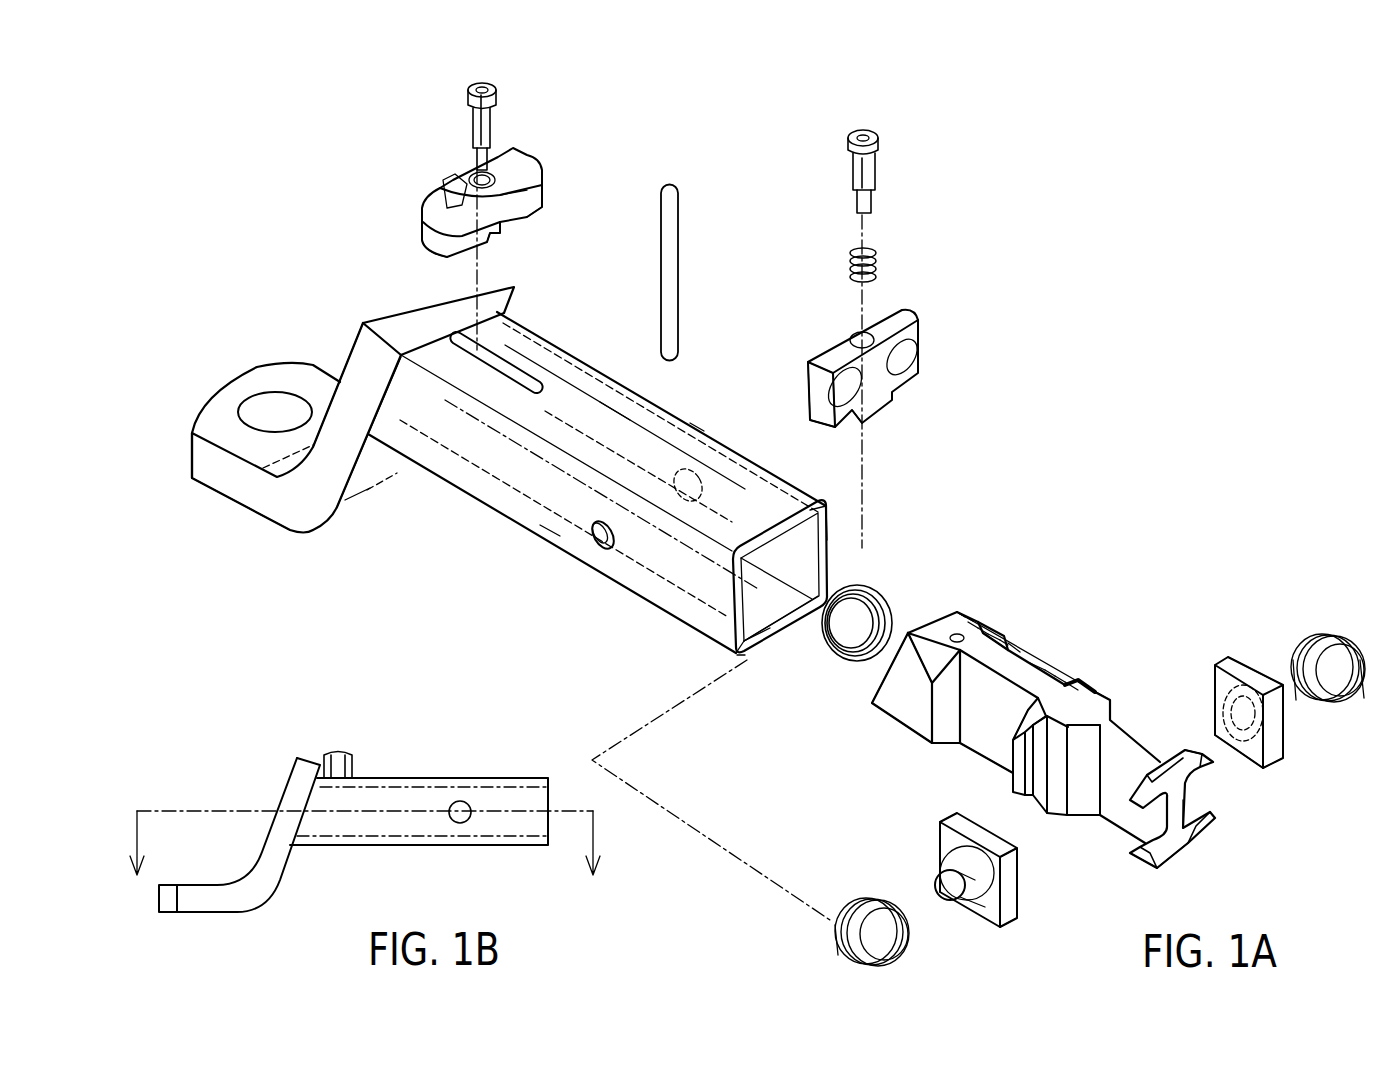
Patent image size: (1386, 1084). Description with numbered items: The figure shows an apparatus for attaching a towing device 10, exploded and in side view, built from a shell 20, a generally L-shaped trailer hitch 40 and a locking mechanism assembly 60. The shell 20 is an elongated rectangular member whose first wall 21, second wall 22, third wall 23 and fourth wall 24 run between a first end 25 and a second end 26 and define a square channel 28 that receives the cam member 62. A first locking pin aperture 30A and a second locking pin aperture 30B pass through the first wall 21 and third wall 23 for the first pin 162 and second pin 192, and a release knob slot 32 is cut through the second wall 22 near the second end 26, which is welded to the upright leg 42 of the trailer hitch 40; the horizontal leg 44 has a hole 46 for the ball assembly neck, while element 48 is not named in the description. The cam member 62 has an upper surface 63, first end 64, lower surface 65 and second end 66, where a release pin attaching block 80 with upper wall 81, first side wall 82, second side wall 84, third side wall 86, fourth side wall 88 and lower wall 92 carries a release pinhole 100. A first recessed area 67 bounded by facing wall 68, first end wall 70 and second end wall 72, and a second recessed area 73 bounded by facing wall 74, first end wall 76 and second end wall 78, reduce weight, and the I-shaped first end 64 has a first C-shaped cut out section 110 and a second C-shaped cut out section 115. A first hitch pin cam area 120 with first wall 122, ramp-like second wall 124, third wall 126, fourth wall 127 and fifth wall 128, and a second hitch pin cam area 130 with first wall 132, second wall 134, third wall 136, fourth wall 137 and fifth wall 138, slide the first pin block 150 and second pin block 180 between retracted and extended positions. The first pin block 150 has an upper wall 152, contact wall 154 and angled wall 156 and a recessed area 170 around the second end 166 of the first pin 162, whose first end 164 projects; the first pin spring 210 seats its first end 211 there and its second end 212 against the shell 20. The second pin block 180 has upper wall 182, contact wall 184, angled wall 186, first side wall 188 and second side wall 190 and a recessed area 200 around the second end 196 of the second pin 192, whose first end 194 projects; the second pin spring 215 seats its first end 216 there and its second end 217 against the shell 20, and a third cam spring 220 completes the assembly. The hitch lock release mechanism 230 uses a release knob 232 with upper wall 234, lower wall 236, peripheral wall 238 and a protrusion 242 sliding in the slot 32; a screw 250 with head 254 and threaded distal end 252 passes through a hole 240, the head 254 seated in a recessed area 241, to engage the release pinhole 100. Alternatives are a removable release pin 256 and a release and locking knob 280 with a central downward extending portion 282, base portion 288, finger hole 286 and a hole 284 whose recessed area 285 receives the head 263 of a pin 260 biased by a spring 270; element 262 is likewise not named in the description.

In FIG. 1A, the apparatus for attaching a towing device 10 is at (458, 613).
In FIG. 1B, the apparatus for attaching a towing device 10 is at (257, 758).
In FIG. 1A, the shell 20 is at (657, 583).
In FIG. 1B, the shell 20 is at (467, 775).
In FIG. 1A, the first wall 21 is at (697, 427).
In FIG. 1A, the second wall 22 is at (615, 403).
In FIG. 1A, the third wall 23 is at (550, 517).
In FIG. 1B, the third wall 23 is at (360, 823).
In FIG. 1A, the fourth wall 24 is at (745, 655).
In FIG. 1A, the first end 25 is at (823, 515).
In FIG. 1A, the second end 26 is at (502, 307).
In FIG. 1A, the channel 28 is at (760, 628).
In FIG. 1A, the first locking pin aperture 30A is at (703, 478).
In FIG. 1A, the second locking pin aperture 30B is at (600, 545).
In FIG. 1A, the release knob slot 32 is at (530, 367).
In FIG. 1A, the trailer hitch 40 is at (252, 514).
In FIG. 1B, the trailer hitch 40 is at (215, 882).
In FIG. 1A, the upright leg 42 is at (365, 360).
In FIG. 1A, the horizontal leg 44 is at (220, 470).
In FIG. 1B, the horizontal leg 44 is at (232, 900).
In FIG. 1A, the hole 46 is at (275, 432).
In FIG. 1A, the bend 48 is at (367, 493).
In FIG. 1A, the locking mechanism assembly 60 is at (1003, 606).
In FIG. 1A, the cam member 62 is at (1080, 678).
In FIG. 1A, the upper surface 63 is at (975, 626).
In FIG. 1A, the first end 64 is at (1197, 847).
In FIG. 1A, the lower surface 65 is at (960, 747).
In FIG. 1A, the second end 66 is at (950, 640).
In FIG. 1A, the first recessed area 67 is at (1007, 648).
In FIG. 1A, the facing wall 68 is at (985, 633).
In FIG. 1A, the first end wall 70 is at (1077, 677).
In FIG. 1A, the second end wall 72 is at (1000, 637).
In FIG. 1A, the second recessed area 73 is at (892, 755).
In FIG. 1A, the facing wall 74 is at (1007, 758).
In FIG. 1A, the first end wall 76 is at (1017, 733).
In FIG. 1A, the second end wall 78 is at (917, 733).
In FIG. 1A, the release pin attaching block 80 is at (958, 614).
In FIG. 1A, the upper wall 81 is at (1012, 624).
In FIG. 1A, the first side wall 82 is at (965, 618).
In FIG. 1A, the second side wall 84 is at (917, 660).
In FIG. 1A, the third side wall 86 is at (1000, 640).
In FIG. 1A, the fourth side wall 88 is at (913, 723).
In FIG. 1A, the lower wall 92 is at (903, 712).
In FIG. 1A, the release pinhole 100 is at (985, 555).
In FIG. 1A, the first C-shaped cut out section 110 is at (1206, 790).
In FIG. 1A, the second C-shaped cut out section 115 is at (1163, 862).
In FIG. 1A, the first hitch pin cam area 120 is at (1137, 722).
In FIG. 1A, the first wall 122 is at (1070, 680).
In FIG. 1A, the second wall 124 is at (1060, 672).
In FIG. 1A, the third wall 126 is at (1050, 668).
In FIG. 1A, the fourth wall 127 is at (1040, 660).
In FIG. 1A, the fifth wall 128 is at (1193, 747).
In FIG. 1A, the second hitch pin cam area 130 is at (1130, 843).
In FIG. 1A, the first wall 132 is at (1140, 818).
In FIG. 1A, the second wall 134 is at (1083, 803).
In FIG. 1A, the third wall 136 is at (1057, 797).
In FIG. 1A, the fourth wall 137 is at (1032, 790).
In FIG. 1A, the fifth wall 138 is at (1183, 783).
In FIG. 1A, the first pin block 150 is at (1296, 707).
In FIG. 1A, the upper wall 152 is at (1255, 675).
In FIG. 1A, the contact wall 154 is at (1258, 768).
In FIG. 1A, the angled wall 156 is at (1216, 666).
In FIG. 1A, the first pin 162 is at (1285, 705).
In FIG. 1A, the first end 164 is at (1262, 660).
In FIG. 1A, the second end 166 is at (1270, 760).
In FIG. 1A, the recessed area 170 is at (1284, 745).
In FIG. 1A, the second pin block 180 is at (977, 875).
In FIG. 1A, the upper wall 182 is at (1018, 863).
In FIG. 1A, the contact wall 184 is at (1017, 893).
In FIG. 1A, the angled wall 186 is at (943, 820).
In FIG. 1A, the first side wall 188 is at (1010, 907).
In FIG. 1A, the second side wall 190 is at (938, 832).
In FIG. 1A, the second pin 192 is at (967, 907).
In FIG. 1A, the first end 194 is at (935, 877).
In FIG. 1B, the first end 194 is at (457, 822).
In FIG. 1A, the second end 196 is at (998, 927).
In FIG. 1A, the recessed area 200 is at (985, 907).
In FIG. 1A, the first pin spring 210 is at (1331, 649).
In FIG. 1A, the first end 211 is at (1282, 690).
In FIG. 1A, the second end 212 is at (1363, 678).
In FIG. 1A, the second pin spring 215 is at (784, 904).
In FIG. 1A, the first end 216 is at (905, 930).
In FIG. 1A, the second end 217 is at (848, 942).
In FIG. 1A, the third cam spring 220 is at (880, 595).
In FIG. 1A, the hitch lock release mechanism 230 is at (492, 168).
In FIG. 1B, the hitch lock release mechanism 230 is at (353, 748).
In FIG. 1A, the release knob 232 is at (533, 160).
In FIG. 1A, the upper wall 234 is at (447, 195).
In FIG. 1A, the lower wall 236 is at (527, 220).
In FIG. 1A, the peripheral wall 238 is at (433, 233).
In FIG. 1A, the hole 240 is at (483, 177).
In FIG. 1A, the recessed area 241 is at (500, 192).
In FIG. 1A, the protrusion 242 is at (500, 243).
In FIG. 1A, the screw 250 is at (430, 119).
In FIG. 1A, the threaded distal end 252 is at (473, 157).
In FIG. 1A, the head 254 is at (467, 95).
In FIG. 1A, the removable release pin 256 is at (683, 243).
In FIG. 1A, the pin 260 is at (912, 168).
In FIG. 1A, the pin tip 262 is at (875, 207).
In FIG. 1A, the head 263 is at (883, 137).
In FIG. 1A, the spring 270 is at (847, 267).
In FIG. 1A, the release and locking knob 280 is at (892, 354).
In FIG. 1A, the central downward extending portion 282 is at (887, 382).
In FIG. 1A, the hole 284 is at (842, 340).
In FIG. 1A, the recessed area 285 is at (890, 345).
In FIG. 1A, the finger hole 286 is at (837, 375).
In FIG. 1A, the base portion 288 is at (882, 412).